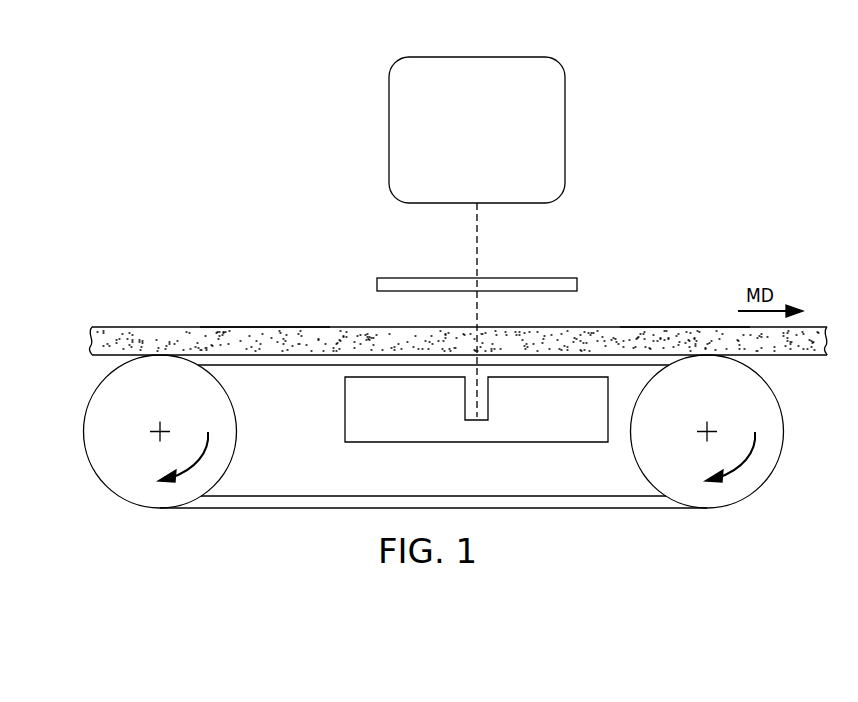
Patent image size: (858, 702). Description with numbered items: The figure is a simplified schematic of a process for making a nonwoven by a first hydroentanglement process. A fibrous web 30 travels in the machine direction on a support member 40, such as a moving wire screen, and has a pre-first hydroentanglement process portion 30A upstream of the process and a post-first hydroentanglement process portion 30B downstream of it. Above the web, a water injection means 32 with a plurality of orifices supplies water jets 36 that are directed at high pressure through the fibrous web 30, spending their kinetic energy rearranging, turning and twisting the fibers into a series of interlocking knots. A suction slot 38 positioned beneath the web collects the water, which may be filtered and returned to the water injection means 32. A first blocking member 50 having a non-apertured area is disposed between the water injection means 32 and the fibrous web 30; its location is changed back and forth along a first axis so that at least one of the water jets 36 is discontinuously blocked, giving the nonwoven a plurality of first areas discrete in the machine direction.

The fibrous web 30 is at (158, 288).
The pre-first hydroentanglement process portion 30A is at (267, 327).
The post-first hydroentanglement process portion 30B is at (683, 327).
The water injection means 32 is at (463, 143).
The water jets 36 is at (479, 262).
The suction slot 38 is at (465, 400).
The support member 40 is at (295, 367).
The first blocking member 50 is at (432, 277).